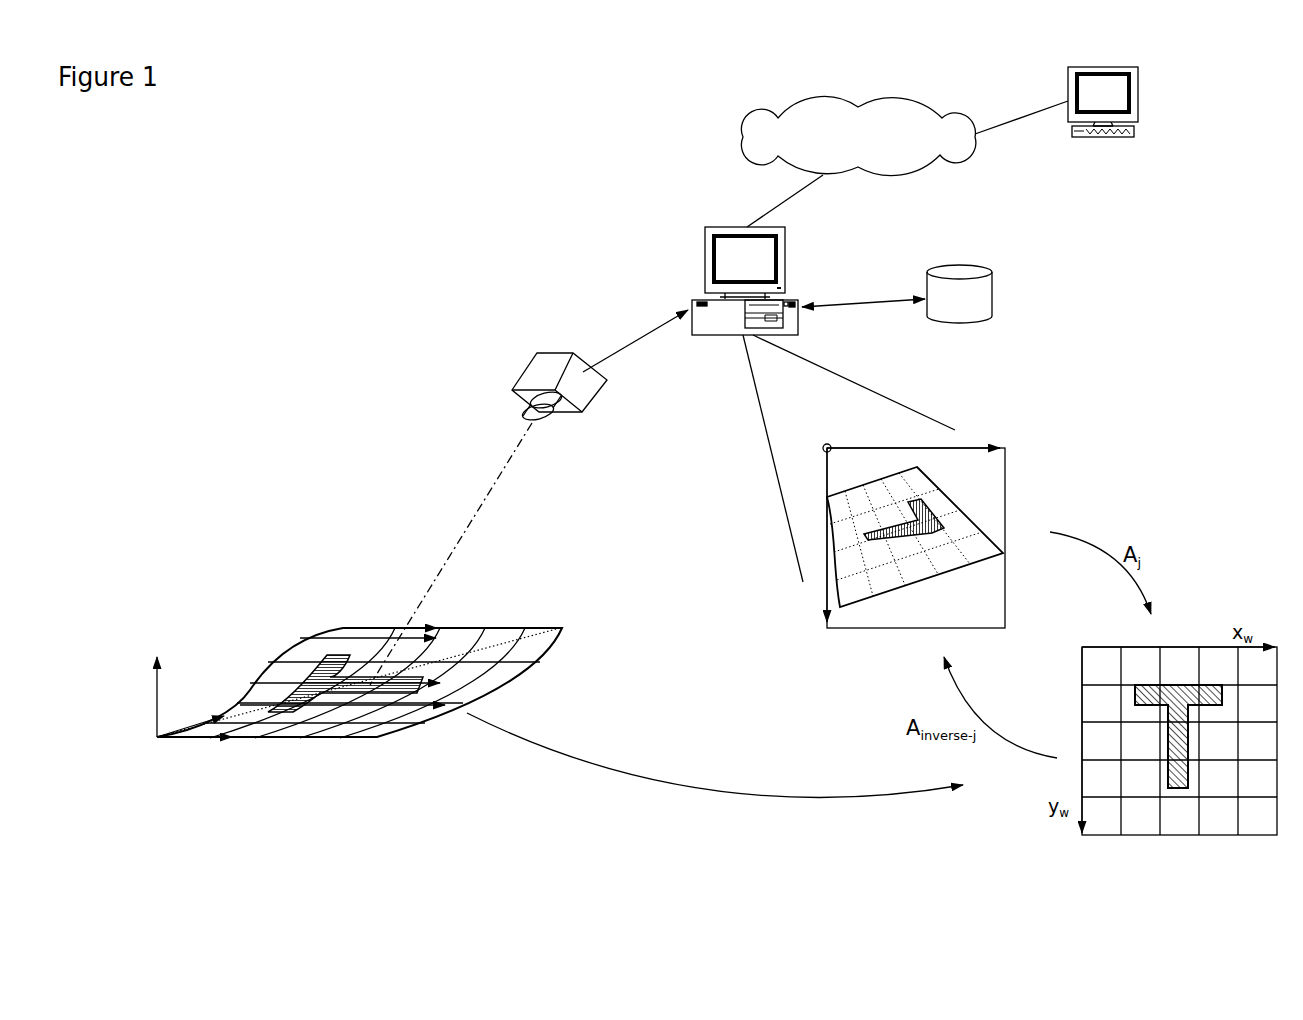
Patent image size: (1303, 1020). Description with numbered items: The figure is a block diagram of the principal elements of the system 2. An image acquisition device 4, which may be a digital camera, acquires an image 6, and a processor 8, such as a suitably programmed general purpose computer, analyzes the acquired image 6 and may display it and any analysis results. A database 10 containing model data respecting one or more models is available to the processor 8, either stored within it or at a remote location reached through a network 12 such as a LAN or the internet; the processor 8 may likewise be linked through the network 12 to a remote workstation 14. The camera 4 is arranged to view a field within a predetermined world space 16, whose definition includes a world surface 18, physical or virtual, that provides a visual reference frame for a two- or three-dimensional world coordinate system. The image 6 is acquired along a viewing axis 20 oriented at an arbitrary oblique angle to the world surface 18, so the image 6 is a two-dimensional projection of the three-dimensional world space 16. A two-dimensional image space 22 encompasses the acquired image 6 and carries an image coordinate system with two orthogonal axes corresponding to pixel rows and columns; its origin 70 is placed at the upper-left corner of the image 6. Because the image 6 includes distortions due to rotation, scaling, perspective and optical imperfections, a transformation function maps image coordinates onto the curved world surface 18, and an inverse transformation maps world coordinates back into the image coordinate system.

The system 2 is at (576, 221).
The image acquisition device 4 is at (535, 368).
The image 6 is at (998, 505).
The processor 8 is at (708, 265).
The database 10 is at (983, 282).
The network 12 is at (925, 113).
The remote workstation 14 is at (1135, 98).
The world space 16 is at (249, 591).
The world surface 18 is at (500, 633).
The viewing axis 20 is at (514, 447).
The image space 22 is at (1024, 444).
The origin 70 is at (825, 446).